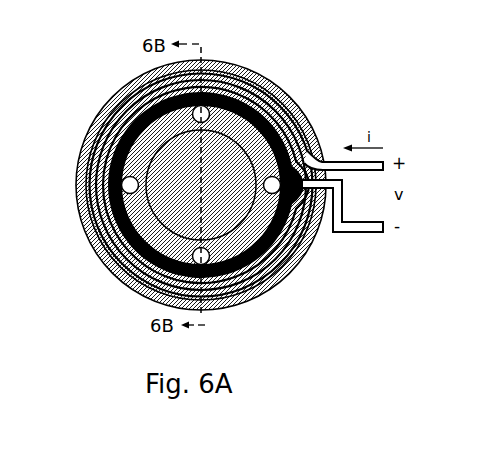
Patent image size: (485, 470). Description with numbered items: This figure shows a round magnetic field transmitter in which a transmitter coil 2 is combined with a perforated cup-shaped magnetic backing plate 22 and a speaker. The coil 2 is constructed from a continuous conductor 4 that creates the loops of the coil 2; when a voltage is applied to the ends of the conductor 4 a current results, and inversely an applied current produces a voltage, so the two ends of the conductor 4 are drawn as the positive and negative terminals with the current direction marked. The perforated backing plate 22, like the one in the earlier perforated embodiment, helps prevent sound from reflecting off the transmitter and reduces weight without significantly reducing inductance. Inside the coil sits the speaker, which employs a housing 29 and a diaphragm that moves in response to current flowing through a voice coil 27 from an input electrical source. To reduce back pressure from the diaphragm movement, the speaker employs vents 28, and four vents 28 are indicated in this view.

The transmitter coil 2 is at (125, 76).
The perforated backing plate 22 is at (284, 90).
The housing 29 is at (122, 132).
The vents 28 is at (122, 184).
The voice coil 27 is at (223, 237).
The conductor 4 is at (342, 233).